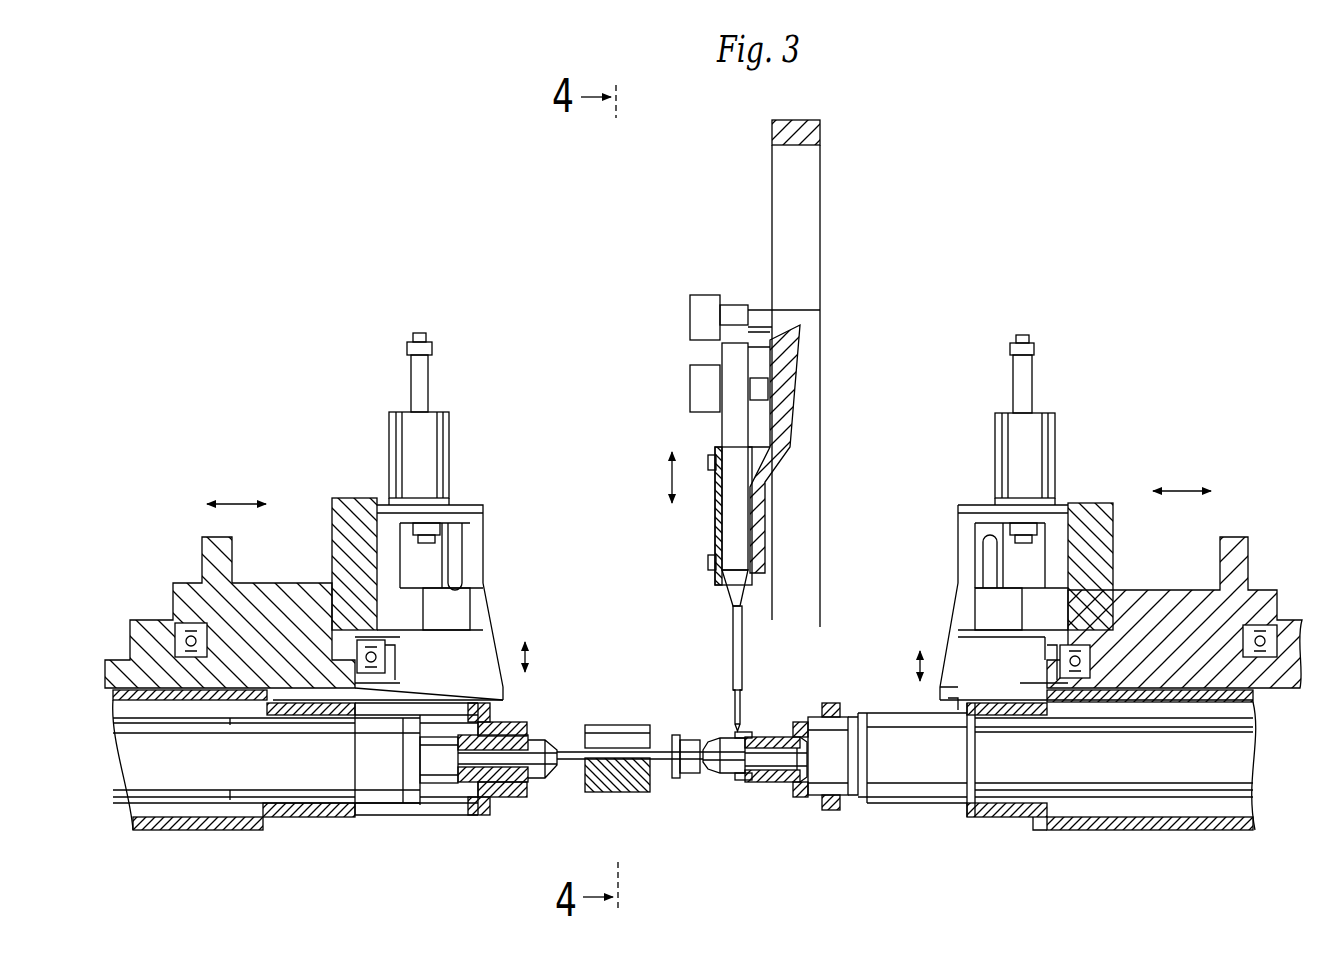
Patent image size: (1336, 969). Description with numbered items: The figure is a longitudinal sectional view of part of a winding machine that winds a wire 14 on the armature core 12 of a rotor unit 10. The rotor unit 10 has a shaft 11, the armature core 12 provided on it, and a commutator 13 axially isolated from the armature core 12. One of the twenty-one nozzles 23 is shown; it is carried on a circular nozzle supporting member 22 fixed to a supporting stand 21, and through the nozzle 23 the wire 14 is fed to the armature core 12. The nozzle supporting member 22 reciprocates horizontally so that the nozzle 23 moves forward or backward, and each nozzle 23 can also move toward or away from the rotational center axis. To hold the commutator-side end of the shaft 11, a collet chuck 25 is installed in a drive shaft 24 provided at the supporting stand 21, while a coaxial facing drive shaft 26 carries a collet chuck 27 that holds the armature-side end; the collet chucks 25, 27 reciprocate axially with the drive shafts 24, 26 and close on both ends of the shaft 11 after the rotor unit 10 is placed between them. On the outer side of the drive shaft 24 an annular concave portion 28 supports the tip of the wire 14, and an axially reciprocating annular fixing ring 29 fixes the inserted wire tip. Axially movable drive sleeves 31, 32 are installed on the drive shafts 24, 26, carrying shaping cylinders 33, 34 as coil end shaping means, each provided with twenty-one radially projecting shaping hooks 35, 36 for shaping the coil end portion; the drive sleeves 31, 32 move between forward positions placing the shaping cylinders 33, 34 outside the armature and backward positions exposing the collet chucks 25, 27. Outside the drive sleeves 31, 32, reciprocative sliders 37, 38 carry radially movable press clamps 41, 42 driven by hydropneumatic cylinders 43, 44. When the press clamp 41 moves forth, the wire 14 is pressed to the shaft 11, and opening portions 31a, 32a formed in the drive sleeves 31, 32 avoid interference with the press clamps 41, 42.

The rotor unit 10 is at (598, 799).
The shaft 11 is at (566, 751).
The armature core 12 is at (615, 723).
The commutator 13 is at (689, 776).
The wire 14 is at (733, 731).
The supporting stand 21 is at (805, 505).
The nozzle supporting member 22 is at (800, 364).
The nozzle 23 is at (738, 518).
The drive shaft 24 is at (780, 784).
The collet chuck 25 is at (720, 776).
The drive shaft 26 is at (446, 775).
The collet chuck 27 is at (528, 792).
The annular concave portion 28 is at (748, 732).
The annular fixing ring 29 is at (747, 782).
The drive sleeve 31 is at (1001, 804).
The opening portion 31a is at (928, 708).
The drive sleeve 32 is at (306, 806).
The opening portion 32a is at (388, 704).
The shaping cylinder 33 is at (836, 710).
The shaping cylinder 34 is at (514, 722).
The nut 35 is at (805, 797).
The shaping hook 36 is at (528, 720).
The reciprocative slider 37 is at (1159, 692).
The reciprocative slider 38 is at (188, 676).
The press clamp 41 is at (946, 693).
The press clamp 42 is at (497, 684).
The hydropneumatic cylinder 43 is at (1035, 437).
The hydropneumatic cylinder 44 is at (430, 452).